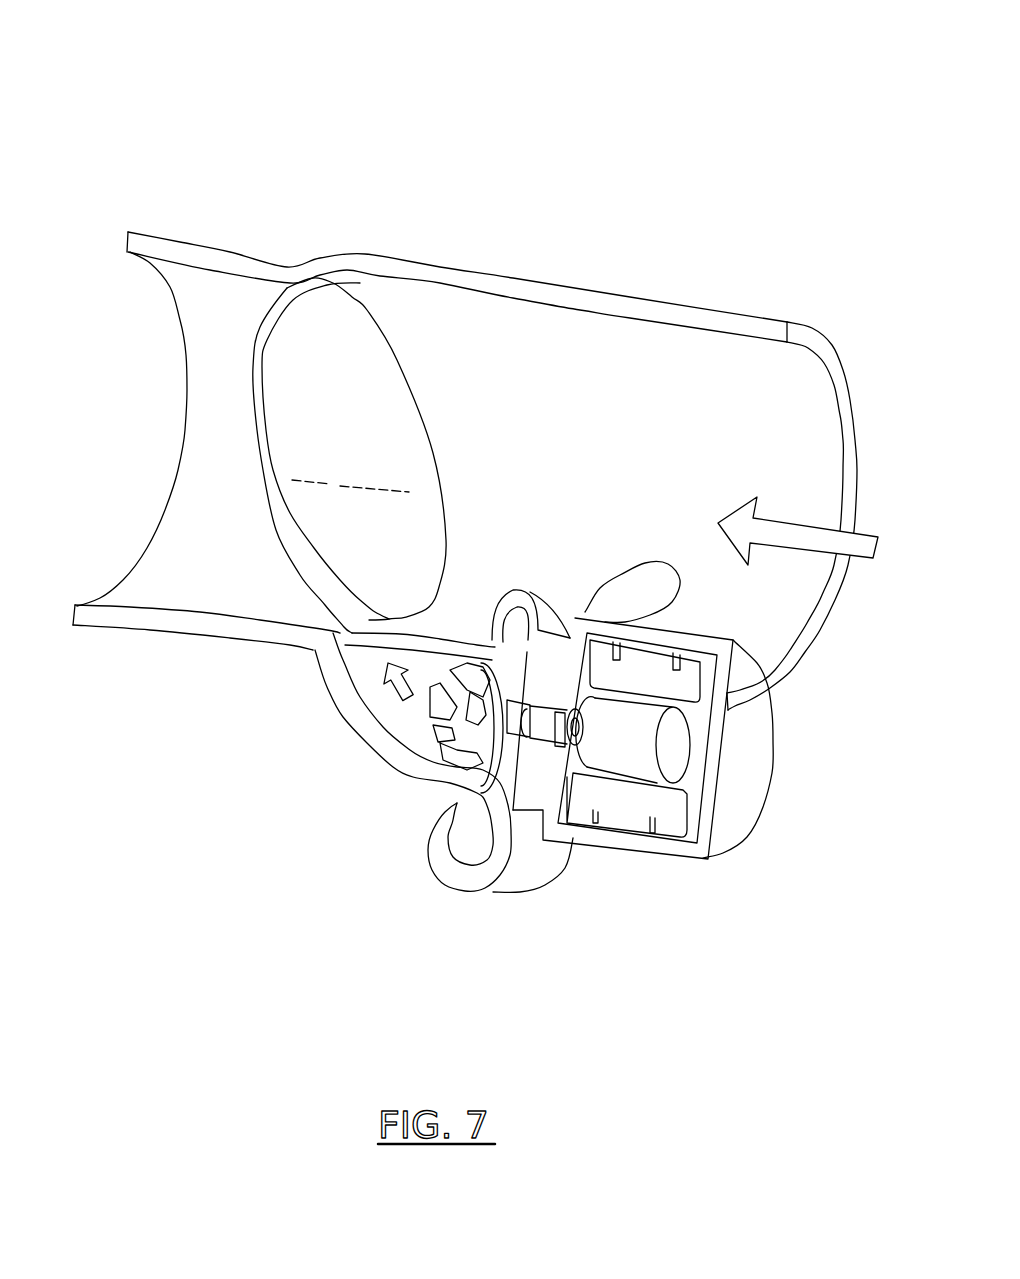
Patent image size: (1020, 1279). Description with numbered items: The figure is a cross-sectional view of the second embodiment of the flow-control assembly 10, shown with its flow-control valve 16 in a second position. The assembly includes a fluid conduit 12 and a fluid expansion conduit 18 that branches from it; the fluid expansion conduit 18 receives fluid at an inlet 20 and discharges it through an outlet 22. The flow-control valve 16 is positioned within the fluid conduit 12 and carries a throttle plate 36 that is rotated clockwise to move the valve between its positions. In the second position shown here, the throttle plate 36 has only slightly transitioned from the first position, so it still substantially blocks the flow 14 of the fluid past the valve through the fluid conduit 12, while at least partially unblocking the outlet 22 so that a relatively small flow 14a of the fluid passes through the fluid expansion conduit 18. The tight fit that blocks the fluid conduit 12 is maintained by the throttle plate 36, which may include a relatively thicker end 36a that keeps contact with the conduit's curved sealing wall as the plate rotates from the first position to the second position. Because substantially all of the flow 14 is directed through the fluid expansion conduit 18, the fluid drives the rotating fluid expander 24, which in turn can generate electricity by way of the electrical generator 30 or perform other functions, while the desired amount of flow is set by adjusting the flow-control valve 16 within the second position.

The flow-control assembly 10 is at (189, 150).
The fluid conduit 12 is at (510, 283).
The flow of the fluid 14 is at (783, 520).
The relatively small flow of the fluid 14a is at (383, 670).
The flow-control valve 16 is at (354, 290).
The fluid expansion conduit 18 is at (337, 698).
The inlet 20 is at (673, 590).
The outlet 22 is at (338, 633).
The rotating fluid expander 24 is at (400, 790).
The electrical generator 30 is at (616, 812).
The throttle plate 36 is at (350, 357).
The relatively thicker end 36a is at (380, 620).